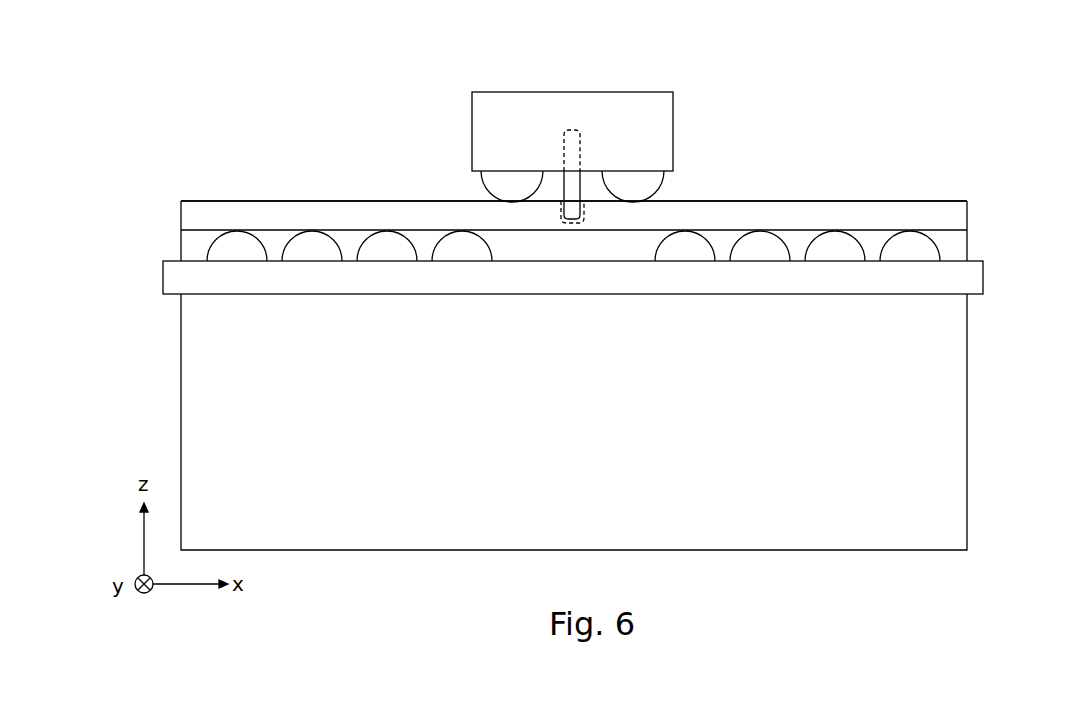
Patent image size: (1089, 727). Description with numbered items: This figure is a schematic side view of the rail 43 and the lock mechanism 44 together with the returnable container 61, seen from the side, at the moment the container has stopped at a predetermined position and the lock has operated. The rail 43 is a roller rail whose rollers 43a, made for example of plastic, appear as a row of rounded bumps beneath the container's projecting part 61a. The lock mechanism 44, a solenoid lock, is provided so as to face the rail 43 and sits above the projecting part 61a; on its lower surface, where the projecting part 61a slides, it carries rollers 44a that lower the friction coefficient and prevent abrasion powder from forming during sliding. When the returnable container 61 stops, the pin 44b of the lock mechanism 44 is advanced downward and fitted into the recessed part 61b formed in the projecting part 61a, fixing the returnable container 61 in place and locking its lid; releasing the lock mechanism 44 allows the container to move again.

The returnable container 61 is at (967, 443).
The projecting part 61a is at (968, 213).
The recessed part 61b is at (586, 208).
The rail 43 is at (968, 280).
The roller 43a is at (938, 245).
The lock mechanism 44 is at (667, 133).
The rollers 44a is at (660, 188).
The pin 44b is at (577, 130).